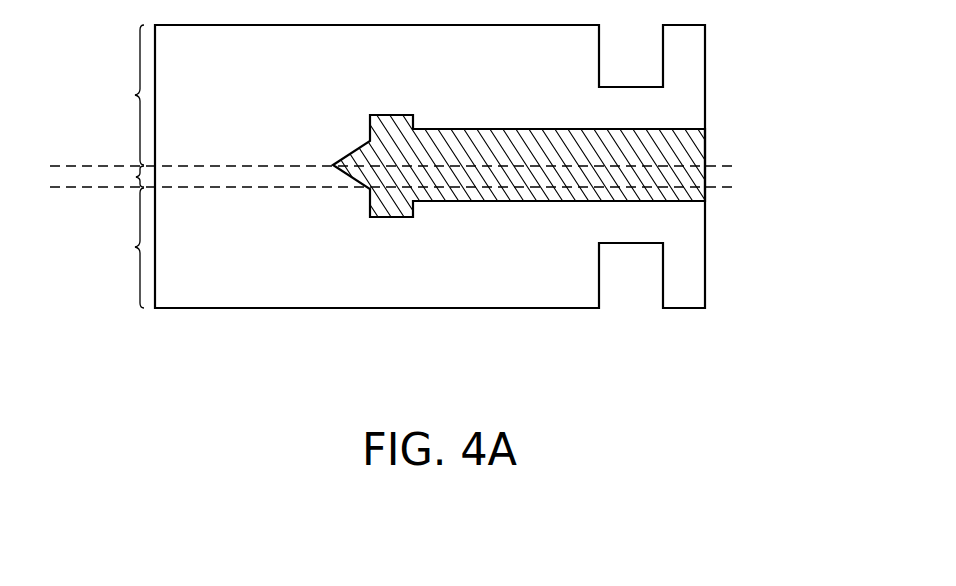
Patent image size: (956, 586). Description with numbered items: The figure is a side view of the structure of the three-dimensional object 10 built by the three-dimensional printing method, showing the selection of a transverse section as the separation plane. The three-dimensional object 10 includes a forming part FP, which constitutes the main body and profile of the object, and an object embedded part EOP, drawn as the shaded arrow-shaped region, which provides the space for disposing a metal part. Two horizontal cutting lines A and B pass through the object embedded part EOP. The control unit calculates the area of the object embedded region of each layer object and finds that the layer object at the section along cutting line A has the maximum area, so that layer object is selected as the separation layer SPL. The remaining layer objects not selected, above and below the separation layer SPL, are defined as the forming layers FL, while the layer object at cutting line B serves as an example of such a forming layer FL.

The forming part FP is at (695, 74).
The object embedded part EOP is at (660, 147).
The separation layer SPL is at (115, 171).
The forming layer FL is at (123, 166).
The cutting line AA' A is at (444, 154).
The cutting line BB' B is at (444, 199).
The 3D object 10 is at (806, 378).